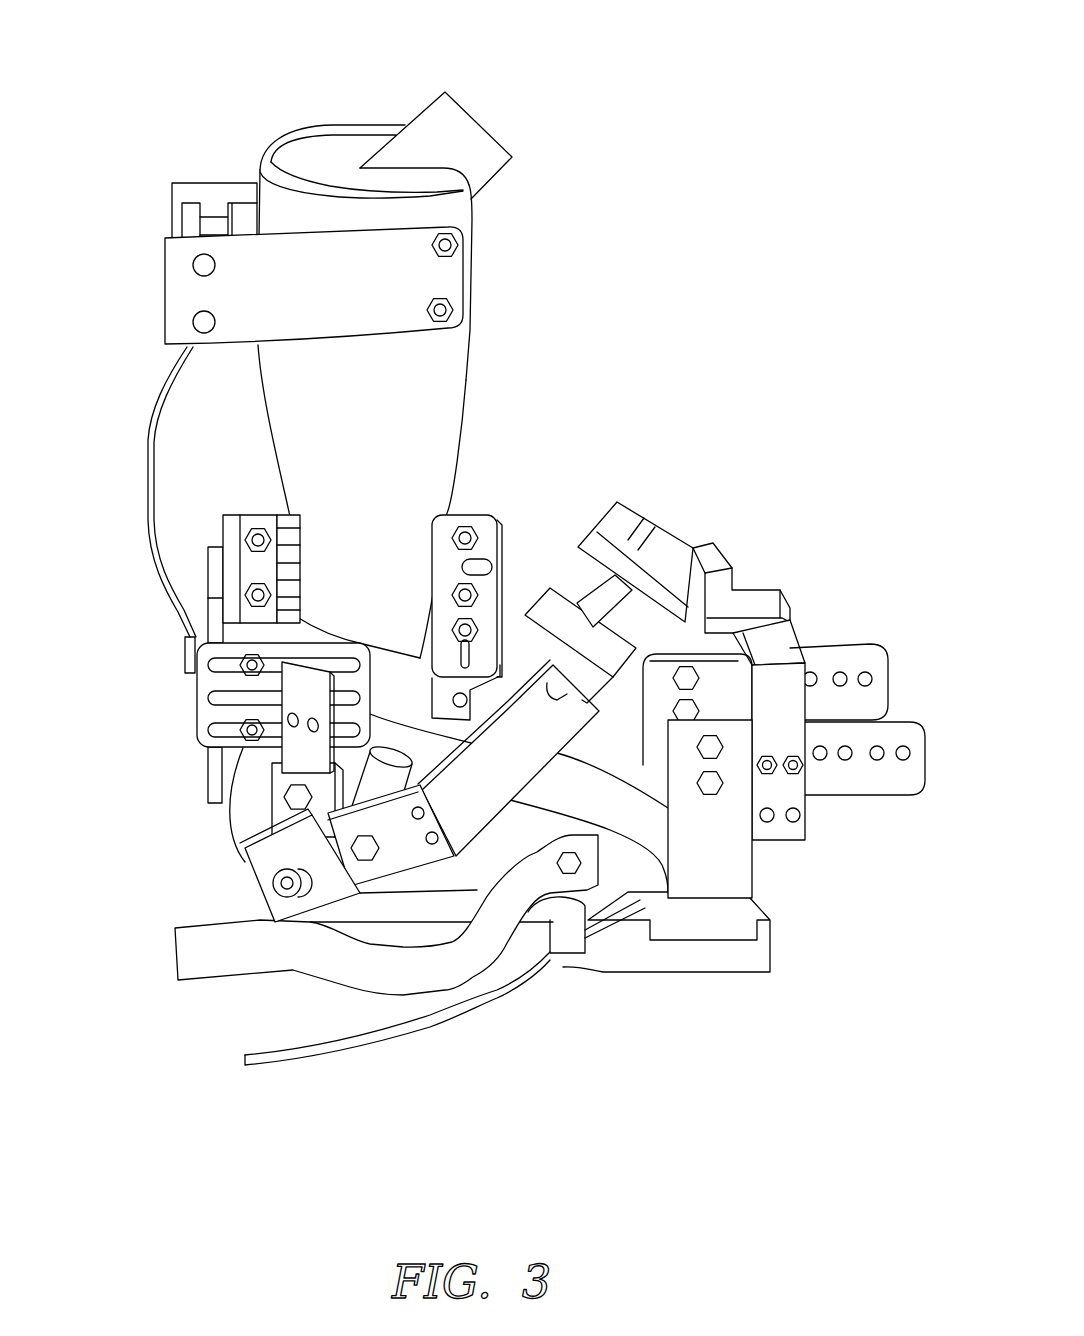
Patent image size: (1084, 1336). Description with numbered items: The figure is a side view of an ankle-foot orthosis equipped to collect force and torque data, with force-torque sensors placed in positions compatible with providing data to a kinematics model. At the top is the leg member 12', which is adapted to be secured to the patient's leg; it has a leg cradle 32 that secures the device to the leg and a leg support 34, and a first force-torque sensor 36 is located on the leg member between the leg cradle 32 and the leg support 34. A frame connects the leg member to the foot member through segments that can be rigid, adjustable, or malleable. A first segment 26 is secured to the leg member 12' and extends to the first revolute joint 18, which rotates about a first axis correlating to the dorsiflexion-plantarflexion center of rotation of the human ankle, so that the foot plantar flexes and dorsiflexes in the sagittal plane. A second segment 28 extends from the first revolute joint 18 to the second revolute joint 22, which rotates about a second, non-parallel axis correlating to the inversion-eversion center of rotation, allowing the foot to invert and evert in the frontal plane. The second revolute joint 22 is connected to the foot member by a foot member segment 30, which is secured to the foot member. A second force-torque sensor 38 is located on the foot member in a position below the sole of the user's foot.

The leg member 12' is at (334, 196).
The first revolute joint 18 is at (280, 880).
The second revolute joint 22 is at (576, 577).
The first segment 26 is at (210, 577).
The second segment 28 is at (403, 847).
The foot member segment 30 is at (708, 867).
The leg cradle 32 is at (442, 363).
The leg support 34 is at (165, 283).
The first force-torque sensor 36 is at (213, 217).
The second force-torque sensor 38 is at (557, 923).